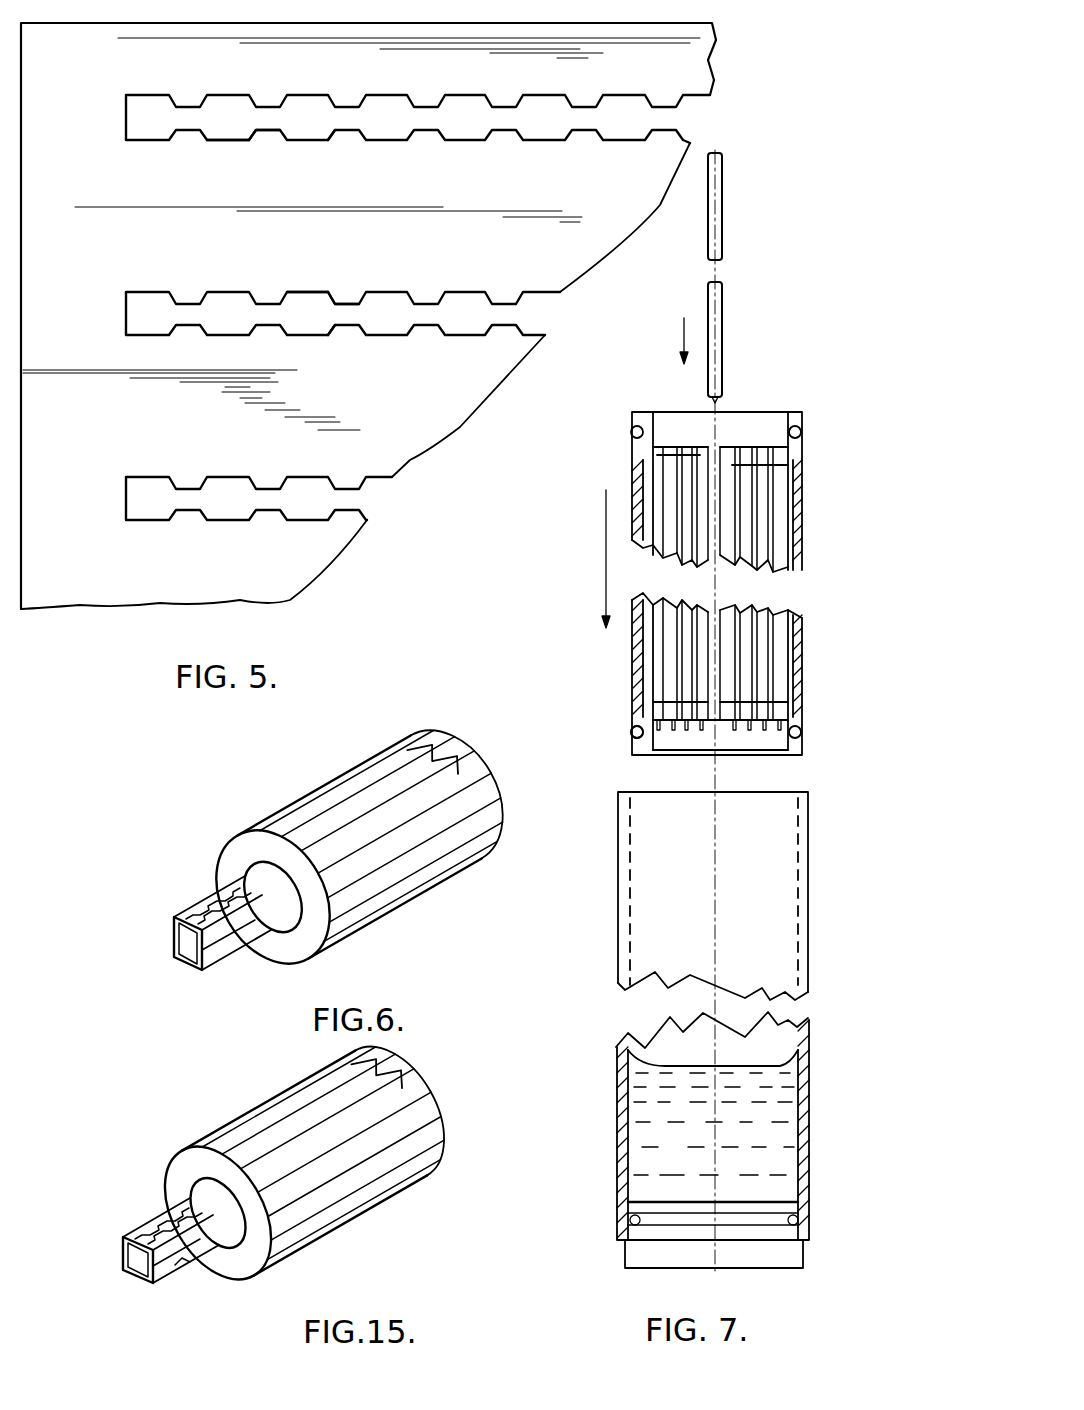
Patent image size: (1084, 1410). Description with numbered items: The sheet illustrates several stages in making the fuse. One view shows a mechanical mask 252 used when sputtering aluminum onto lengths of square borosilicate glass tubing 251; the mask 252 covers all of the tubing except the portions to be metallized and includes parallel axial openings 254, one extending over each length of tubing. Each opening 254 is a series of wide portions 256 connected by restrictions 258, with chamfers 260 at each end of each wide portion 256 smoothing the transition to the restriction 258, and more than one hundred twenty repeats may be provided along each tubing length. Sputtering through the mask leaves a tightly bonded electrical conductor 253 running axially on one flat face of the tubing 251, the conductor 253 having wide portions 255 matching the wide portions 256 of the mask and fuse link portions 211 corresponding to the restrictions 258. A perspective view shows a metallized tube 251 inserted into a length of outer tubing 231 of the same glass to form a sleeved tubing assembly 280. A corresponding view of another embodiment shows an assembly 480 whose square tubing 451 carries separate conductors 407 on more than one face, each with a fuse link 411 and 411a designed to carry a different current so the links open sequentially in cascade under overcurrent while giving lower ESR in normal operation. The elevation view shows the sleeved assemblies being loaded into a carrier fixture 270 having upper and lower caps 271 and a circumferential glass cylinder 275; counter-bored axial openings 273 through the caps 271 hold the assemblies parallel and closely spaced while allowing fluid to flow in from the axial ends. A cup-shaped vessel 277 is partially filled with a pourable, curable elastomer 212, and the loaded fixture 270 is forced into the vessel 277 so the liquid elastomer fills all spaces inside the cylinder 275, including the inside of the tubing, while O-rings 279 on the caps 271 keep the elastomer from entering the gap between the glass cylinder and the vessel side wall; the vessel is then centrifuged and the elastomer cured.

In FIG. 5, the mechanical mask 252 is at (305, 563).
In FIG. 5, the opening 254 is at (523, 253).
In FIG. 5, the wide portion 256 is at (222, 135).
In FIG. 5, the restriction 258 is at (266, 124).
In FIG. 5, the chamfer 260 is at (346, 142).
In FIG. 6, the sleeved tubing assembly 280 is at (320, 767).
In FIG. 7, the sleeved tubing assembly 280 is at (725, 372).
In FIG. 6, the outer tubing 231 is at (414, 862).
In FIG. 6, the glass tubing 251 is at (214, 960).
In FIG. 6, the electrical conductor 253 is at (196, 910).
In FIG. 6, the wide portion 255 is at (221, 900).
In FIG. 6, the fuse link portion 211 is at (258, 942).
In FIG. 15, the assembly 480 is at (266, 1104).
In FIG. 15, the square tubing 451 is at (148, 1283).
In FIG. 15, the conductor 407 is at (172, 1217).
In FIG. 15, the fuse link 411 is at (193, 1193).
In FIG. 15, the fuse link 411a is at (212, 1260).
In FIG. 7, the carrier fixture 270 is at (816, 528).
In FIG. 7, the cap 271 is at (803, 420).
In FIG. 7, the counter-bored axial opening 273 is at (712, 455).
In FIG. 7, the glass cylinder 275 is at (640, 673).
In FIG. 7, the O-ring 279 is at (631, 732).
In FIG. 7, the cup-shaped vessel 277 is at (618, 1103).
In FIG. 7, the elastomer 212 is at (767, 1112).